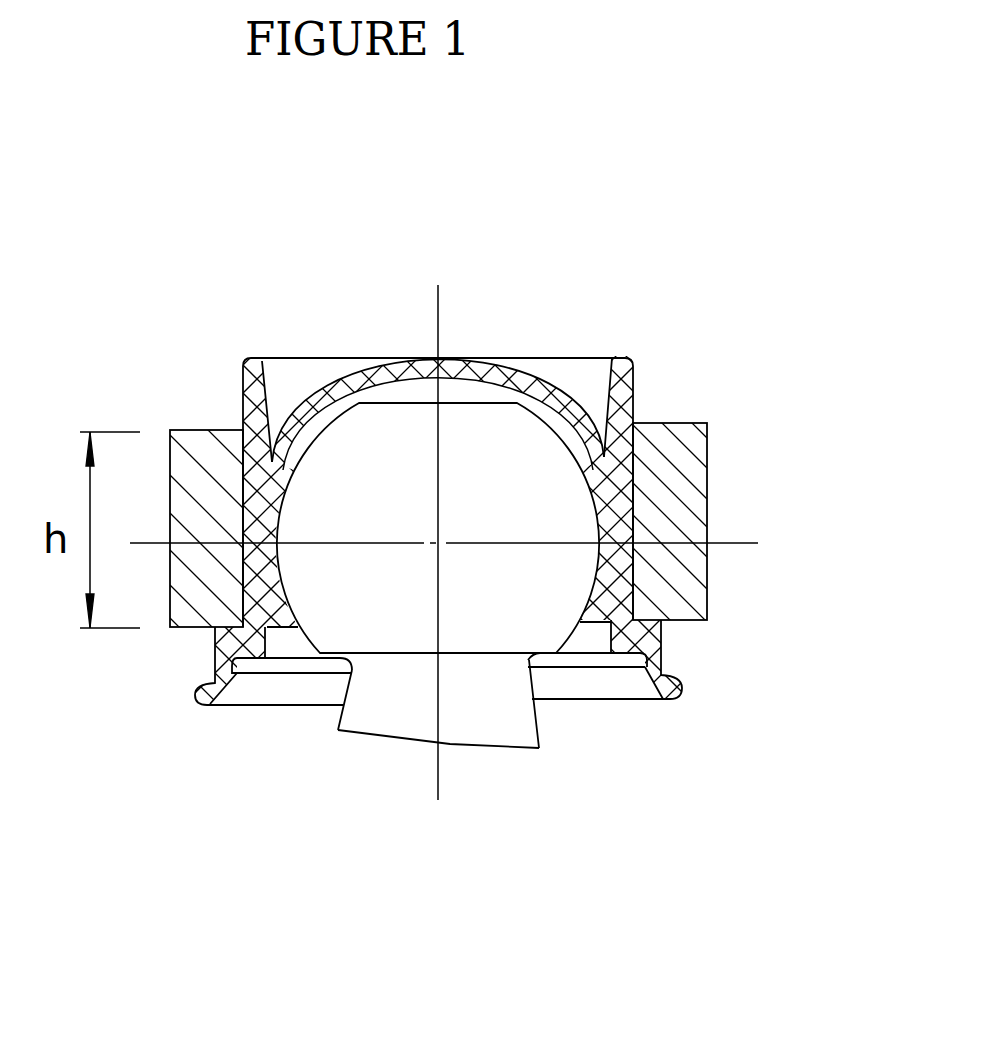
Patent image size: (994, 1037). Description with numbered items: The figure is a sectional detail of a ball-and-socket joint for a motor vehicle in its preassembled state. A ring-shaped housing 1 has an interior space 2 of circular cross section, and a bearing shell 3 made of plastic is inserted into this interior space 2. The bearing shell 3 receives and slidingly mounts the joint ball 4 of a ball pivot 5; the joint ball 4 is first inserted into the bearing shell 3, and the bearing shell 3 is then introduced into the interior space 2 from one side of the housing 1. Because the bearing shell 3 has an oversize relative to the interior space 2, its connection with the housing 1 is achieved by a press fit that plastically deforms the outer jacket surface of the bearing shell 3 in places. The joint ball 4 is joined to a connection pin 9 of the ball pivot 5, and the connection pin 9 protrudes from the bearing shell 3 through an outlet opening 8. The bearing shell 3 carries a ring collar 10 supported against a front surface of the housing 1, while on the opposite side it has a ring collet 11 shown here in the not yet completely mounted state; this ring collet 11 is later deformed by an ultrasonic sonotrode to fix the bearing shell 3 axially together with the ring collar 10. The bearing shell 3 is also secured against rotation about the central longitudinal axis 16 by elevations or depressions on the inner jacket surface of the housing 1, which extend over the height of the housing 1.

The housing 1 is at (683, 575).
The interior space 2 is at (238, 473).
The bearing shell 3 is at (252, 563).
The joint ball 4 is at (372, 575).
The ball pivot 5 is at (348, 745).
The outlet opening 8 is at (598, 647).
The connection pin 9 is at (397, 695).
The ring collar 10 is at (655, 633).
The ring collet 11 is at (635, 372).
The central longitudinal axis 16 is at (438, 728).